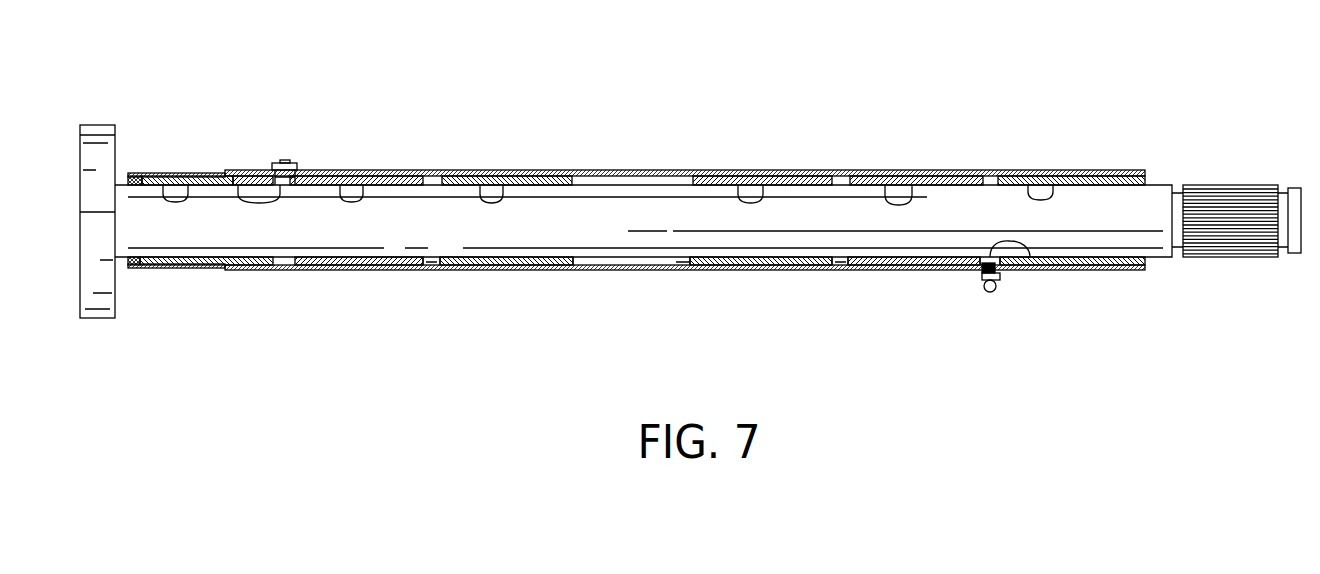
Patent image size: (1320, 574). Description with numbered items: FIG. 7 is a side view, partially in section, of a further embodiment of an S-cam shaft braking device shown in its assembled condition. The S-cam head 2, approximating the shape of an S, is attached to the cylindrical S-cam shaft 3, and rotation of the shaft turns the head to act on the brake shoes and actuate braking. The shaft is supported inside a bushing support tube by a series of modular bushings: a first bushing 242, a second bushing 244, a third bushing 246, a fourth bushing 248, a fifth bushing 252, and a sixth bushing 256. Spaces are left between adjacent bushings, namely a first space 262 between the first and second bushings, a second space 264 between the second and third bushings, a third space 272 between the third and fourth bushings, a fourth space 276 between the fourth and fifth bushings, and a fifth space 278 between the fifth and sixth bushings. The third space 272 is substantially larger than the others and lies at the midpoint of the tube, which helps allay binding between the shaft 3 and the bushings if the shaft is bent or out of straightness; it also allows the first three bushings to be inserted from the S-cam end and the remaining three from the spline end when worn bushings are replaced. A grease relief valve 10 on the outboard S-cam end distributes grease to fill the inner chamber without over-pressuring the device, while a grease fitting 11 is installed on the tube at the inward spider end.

The S-cam head 2 is at (98, 300).
The S-cam shaft 3 is at (1157, 198).
The grease relief valve 10 is at (290, 163).
The grease fitting 11 is at (990, 292).
The first bushing 242 is at (165, 185).
The second bushing 244 is at (360, 185).
The third bushing 246 is at (503, 185).
The fourth bushing 248 is at (763, 185).
The fifth bushing 252 is at (912, 185).
The sixth bushing 256 is at (1053, 185).
The first space 262 is at (236, 185).
The second space 264 is at (433, 263).
The third space 272 is at (683, 263).
The fourth space 276 is at (838, 263).
The fifth space 278 is at (1035, 250).